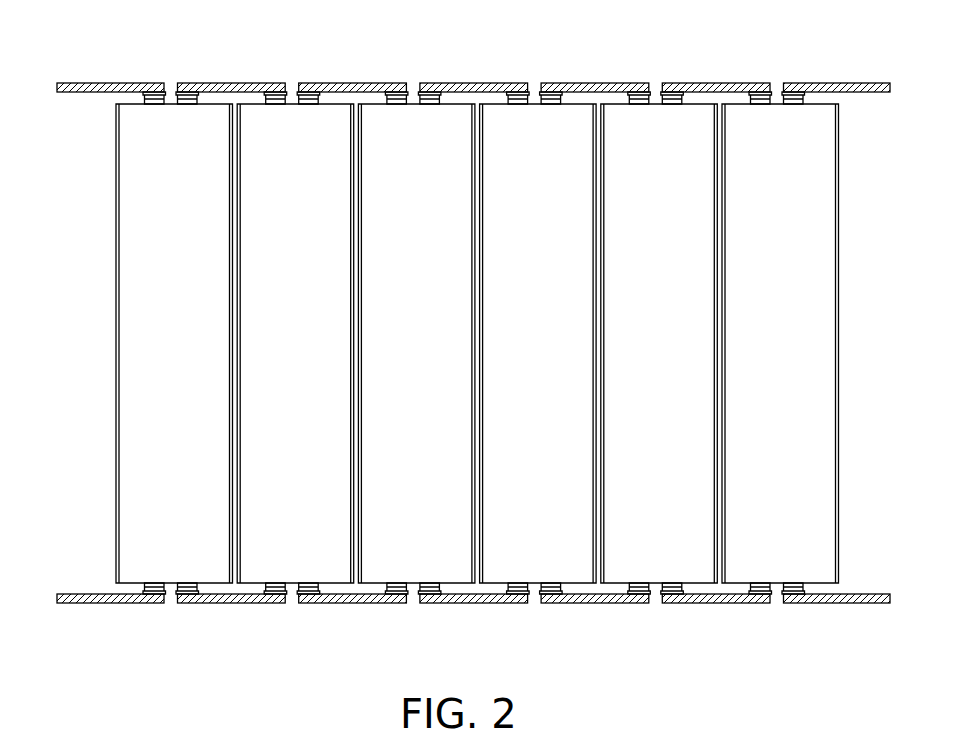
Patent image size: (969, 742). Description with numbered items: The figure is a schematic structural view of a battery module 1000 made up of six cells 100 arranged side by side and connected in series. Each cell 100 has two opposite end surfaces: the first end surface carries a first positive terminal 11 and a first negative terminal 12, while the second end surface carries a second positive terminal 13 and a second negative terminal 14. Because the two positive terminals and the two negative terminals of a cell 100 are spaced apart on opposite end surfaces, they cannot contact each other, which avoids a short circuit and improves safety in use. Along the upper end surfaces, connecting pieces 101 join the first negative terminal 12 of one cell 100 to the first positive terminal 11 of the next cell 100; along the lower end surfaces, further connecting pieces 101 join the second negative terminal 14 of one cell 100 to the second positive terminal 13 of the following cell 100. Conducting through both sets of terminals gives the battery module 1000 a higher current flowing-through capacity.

The battery module 1000 is at (493, 58).
The cell 100 is at (140, 250).
The connecting piece 101 is at (111, 84).
The first positive terminal 11 is at (164, 96).
The first negative terminal 12 is at (184, 100).
The second positive terminal 13 is at (150, 598).
The second negative terminal 14 is at (186, 598).